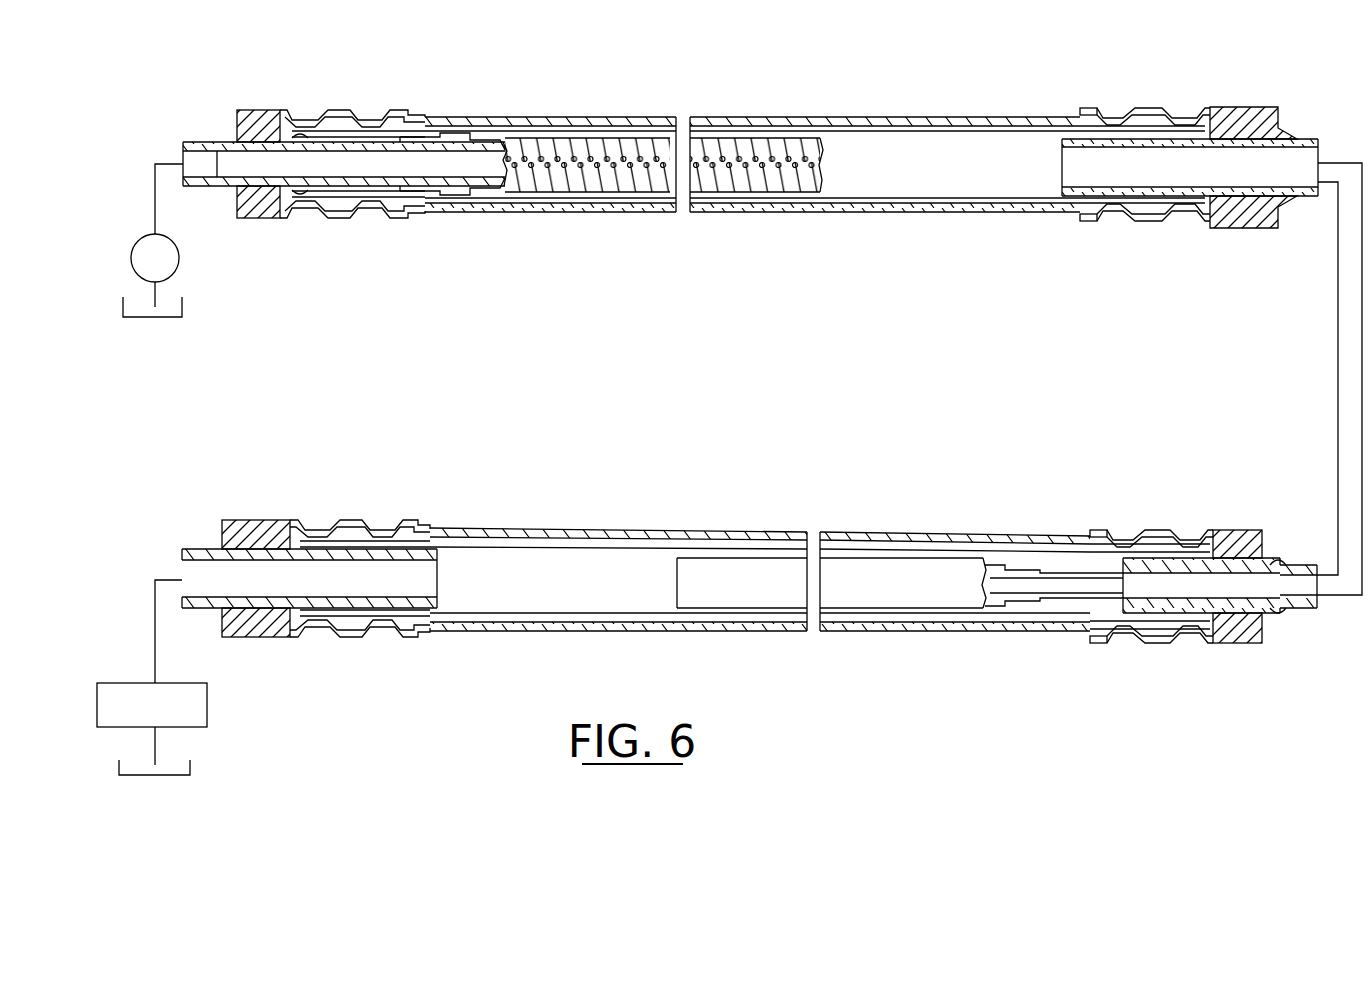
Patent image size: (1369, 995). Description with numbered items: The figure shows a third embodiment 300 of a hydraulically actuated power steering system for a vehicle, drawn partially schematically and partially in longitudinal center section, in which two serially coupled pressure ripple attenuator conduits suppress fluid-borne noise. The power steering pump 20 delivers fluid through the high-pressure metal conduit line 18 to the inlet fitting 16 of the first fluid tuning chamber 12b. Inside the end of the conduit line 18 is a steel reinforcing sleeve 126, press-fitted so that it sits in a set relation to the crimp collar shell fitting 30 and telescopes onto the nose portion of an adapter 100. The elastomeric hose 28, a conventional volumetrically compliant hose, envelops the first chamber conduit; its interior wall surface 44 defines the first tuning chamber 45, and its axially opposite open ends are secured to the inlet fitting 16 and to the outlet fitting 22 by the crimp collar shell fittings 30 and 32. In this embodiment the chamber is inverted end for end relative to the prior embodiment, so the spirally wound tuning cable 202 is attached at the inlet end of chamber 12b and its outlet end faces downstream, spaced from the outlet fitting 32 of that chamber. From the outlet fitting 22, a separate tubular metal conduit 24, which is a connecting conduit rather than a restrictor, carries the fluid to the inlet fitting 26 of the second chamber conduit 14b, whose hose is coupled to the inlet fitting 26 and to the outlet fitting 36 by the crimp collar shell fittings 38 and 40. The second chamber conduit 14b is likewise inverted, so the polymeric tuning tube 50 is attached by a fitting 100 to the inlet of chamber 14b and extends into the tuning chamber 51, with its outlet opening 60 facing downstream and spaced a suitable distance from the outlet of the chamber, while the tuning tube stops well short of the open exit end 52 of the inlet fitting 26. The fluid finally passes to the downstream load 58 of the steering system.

The third embodiment of hydraulically actuated power steering system 300 is at (204, 93).
The fluid tuning chamber 12b is at (210, 127).
The high-pressure metal conduit line 18 is at (151, 207).
The power steering pump 20 is at (180, 271).
The inlet fitting 16 is at (208, 197).
The steel reinforcing sleeve 126 is at (312, 174).
The crimp collar shell fitting 30 is at (334, 108).
The adapter 100 is at (454, 136).
The spirally wound tuning cable 202 is at (717, 133).
The elastomeric hose 28 is at (839, 111).
The first tuning chamber 45 is at (925, 147).
The interior wall surface 44 is at (893, 130).
The crimp collar shell fitting 32 is at (1153, 104).
The outlet fitting 22 is at (1306, 133).
The tubular metal conduit 24 is at (1328, 338).
The inlet fitting 26 is at (211, 540).
The second chamber conduit 14b is at (198, 533).
The open exit end 52 is at (437, 580).
The outlet opening 60 is at (676, 580).
The tuning chamber 51 is at (576, 597).
The polymeric tuning tube 50 is at (780, 611).
The outlet fitting 36 is at (1301, 550).
The crimp collar shell fitting 40 is at (1155, 652).
The crimp collar shell fitting 38 is at (356, 645).
The load 58 is at (214, 709).